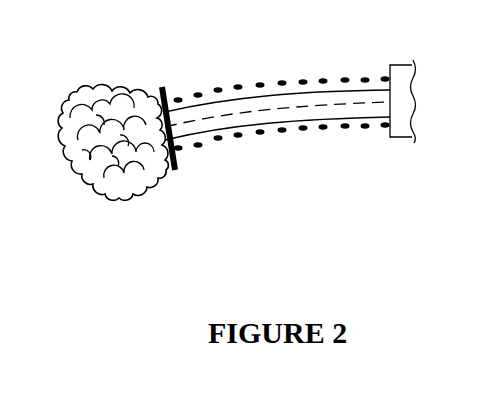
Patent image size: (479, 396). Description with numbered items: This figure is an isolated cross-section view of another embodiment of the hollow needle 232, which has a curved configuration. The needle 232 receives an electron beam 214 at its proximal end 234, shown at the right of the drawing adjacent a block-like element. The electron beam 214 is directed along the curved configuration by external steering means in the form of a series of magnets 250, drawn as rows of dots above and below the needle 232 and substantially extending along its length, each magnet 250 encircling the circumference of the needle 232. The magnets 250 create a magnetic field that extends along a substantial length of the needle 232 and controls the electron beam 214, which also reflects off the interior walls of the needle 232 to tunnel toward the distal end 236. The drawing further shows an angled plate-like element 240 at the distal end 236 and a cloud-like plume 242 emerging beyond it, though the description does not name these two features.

The electron beam 214 is at (279, 105).
The hollow needle 232 is at (218, 88).
The proximal end 234 is at (383, 128).
The distal end 236 is at (180, 150).
The output end face / filter plate 240 is at (162, 87).
The emitted light plume / cloud 242 is at (125, 198).
The magnets 250 is at (302, 80).